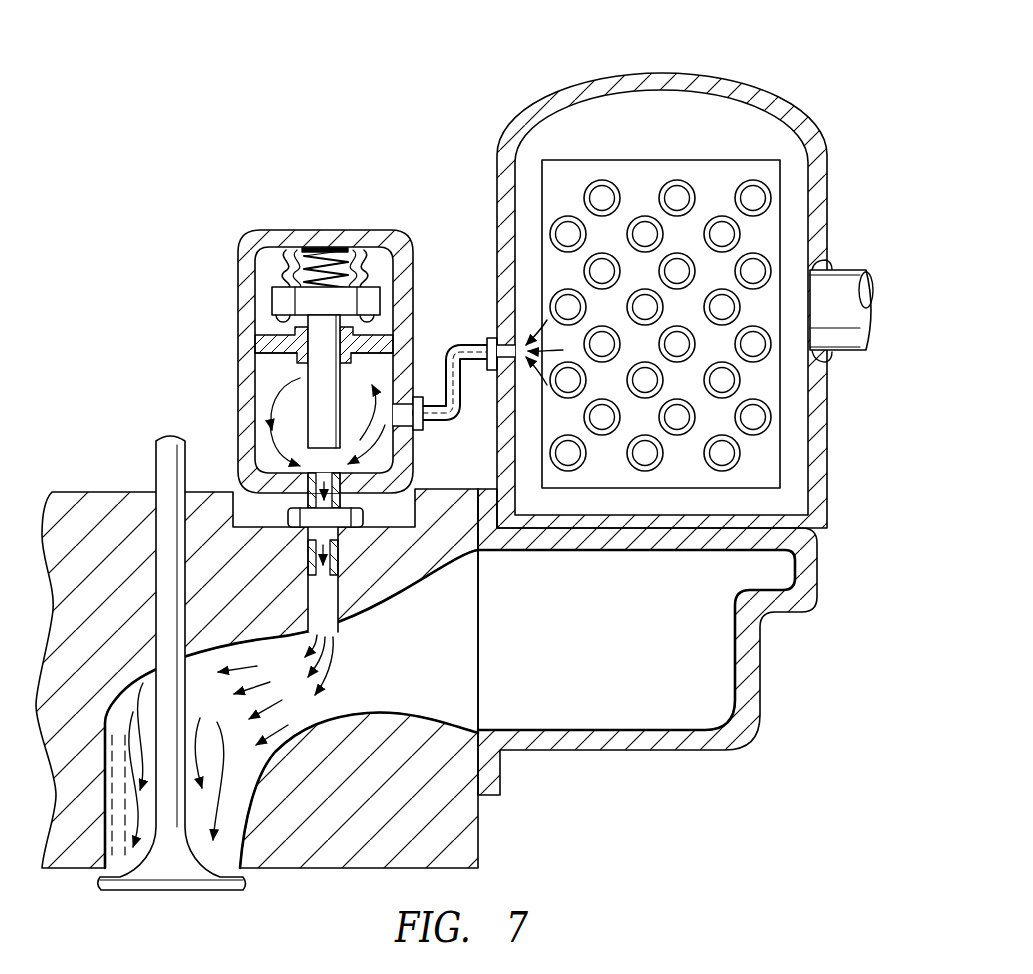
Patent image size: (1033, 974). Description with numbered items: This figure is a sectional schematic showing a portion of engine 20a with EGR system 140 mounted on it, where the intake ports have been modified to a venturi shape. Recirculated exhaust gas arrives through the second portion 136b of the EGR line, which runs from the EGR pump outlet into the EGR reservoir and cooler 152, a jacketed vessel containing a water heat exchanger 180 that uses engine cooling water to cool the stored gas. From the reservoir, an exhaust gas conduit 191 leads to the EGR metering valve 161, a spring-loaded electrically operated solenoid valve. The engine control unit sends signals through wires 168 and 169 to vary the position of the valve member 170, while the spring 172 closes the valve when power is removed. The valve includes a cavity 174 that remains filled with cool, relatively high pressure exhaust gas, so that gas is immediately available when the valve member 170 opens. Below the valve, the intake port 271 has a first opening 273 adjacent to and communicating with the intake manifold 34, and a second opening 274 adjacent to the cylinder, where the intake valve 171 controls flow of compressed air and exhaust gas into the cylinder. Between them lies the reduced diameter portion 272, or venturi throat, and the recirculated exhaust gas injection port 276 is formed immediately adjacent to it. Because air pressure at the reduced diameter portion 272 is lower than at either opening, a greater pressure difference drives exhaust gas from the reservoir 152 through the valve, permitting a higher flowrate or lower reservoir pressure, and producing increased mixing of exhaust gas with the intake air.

The EGR system 140 is at (361, 96).
The EGR reservoir and cooler 152 is at (705, 69).
The water heat exchanger 180 is at (648, 154).
The second portion of EGR line 136b is at (852, 352).
The exhaust gas conduit 191 is at (468, 345).
The EGR metering valve 161 is at (236, 292).
The wire 168 is at (290, 232).
The wire 169 is at (358, 232).
The spring 172 is at (326, 246).
The valve member 170 is at (317, 380).
The cavity 174 is at (295, 400).
The intake valve 171 is at (156, 472).
The recirculated exhaust gas injection port 276 is at (335, 636).
The intake port 271 is at (458, 645).
The first opening 273 is at (478, 689).
The reduced diameter portion 272 is at (318, 725).
The intake manifold 34 is at (760, 681).
The engine 20a is at (508, 846).
The second opening 274 is at (122, 860).